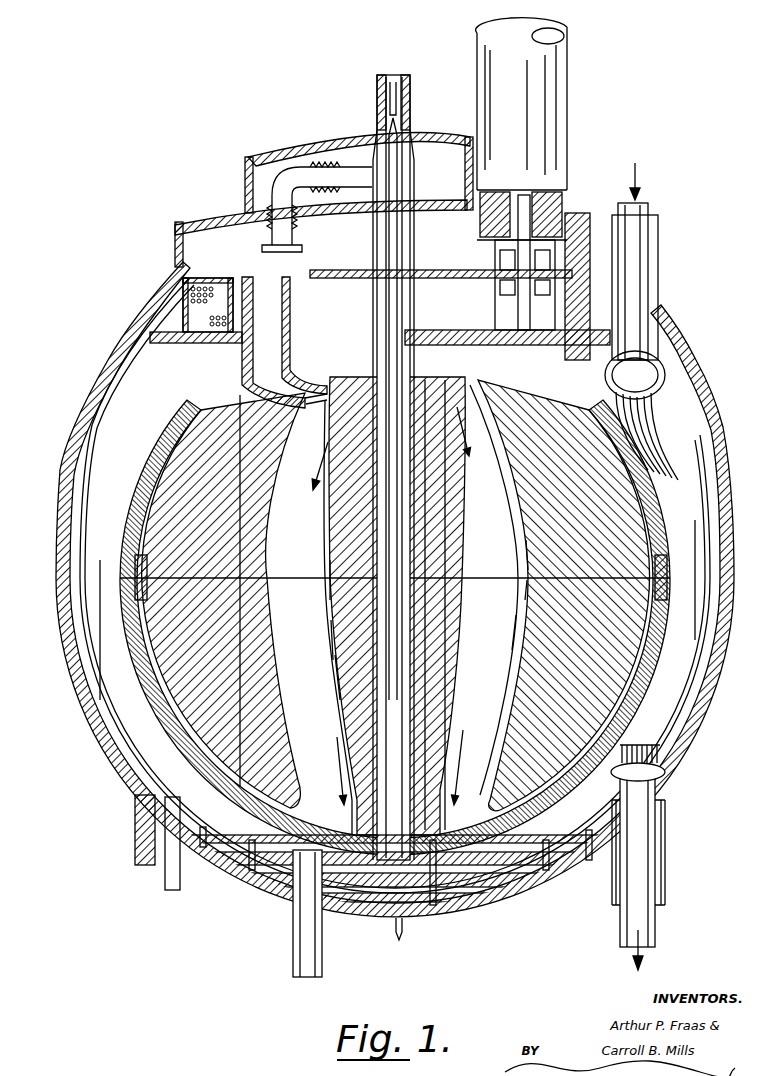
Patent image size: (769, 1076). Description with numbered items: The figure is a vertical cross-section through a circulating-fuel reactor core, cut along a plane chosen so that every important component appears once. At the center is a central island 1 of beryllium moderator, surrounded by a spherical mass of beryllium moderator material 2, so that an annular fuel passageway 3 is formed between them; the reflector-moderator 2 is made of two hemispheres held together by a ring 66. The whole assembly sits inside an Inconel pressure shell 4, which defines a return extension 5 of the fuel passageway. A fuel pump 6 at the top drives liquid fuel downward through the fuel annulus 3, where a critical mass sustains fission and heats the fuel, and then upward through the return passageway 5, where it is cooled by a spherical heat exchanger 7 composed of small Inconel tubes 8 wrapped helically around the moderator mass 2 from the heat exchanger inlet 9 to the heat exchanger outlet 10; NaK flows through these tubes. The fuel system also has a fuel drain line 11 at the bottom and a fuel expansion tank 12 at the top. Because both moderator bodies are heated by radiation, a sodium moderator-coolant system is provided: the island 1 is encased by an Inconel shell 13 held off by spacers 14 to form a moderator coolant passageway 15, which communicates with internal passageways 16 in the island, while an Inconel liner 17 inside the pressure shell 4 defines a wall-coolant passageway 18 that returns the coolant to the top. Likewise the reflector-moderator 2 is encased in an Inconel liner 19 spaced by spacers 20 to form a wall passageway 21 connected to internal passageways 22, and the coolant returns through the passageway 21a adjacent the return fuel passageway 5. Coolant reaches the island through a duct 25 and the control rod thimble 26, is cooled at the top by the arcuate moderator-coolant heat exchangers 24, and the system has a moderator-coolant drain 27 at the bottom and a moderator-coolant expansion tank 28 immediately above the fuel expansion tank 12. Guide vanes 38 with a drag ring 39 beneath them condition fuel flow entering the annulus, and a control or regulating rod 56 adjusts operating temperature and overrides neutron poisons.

The central island 1 is at (360, 517).
The moderator material 2 is at (208, 683).
The annular fuel passageway 3 is at (296, 537).
The pressure shell 4 is at (70, 420).
The return extension of the fuel passageway 5 is at (128, 693).
The fuel pump 6 is at (568, 148).
The spherical heat exchanger 7 is at (667, 358).
The Inconel tubes 8 is at (657, 462).
The heat exchanger inlet 9 is at (648, 207).
The heat exchanger outlet 10 is at (656, 937).
The fuel drain line 11 is at (293, 969).
The fuel expansion tank 12 is at (353, 255).
The Inconel shell 13 is at (332, 639).
The spacers 14 is at (342, 674).
The moderator coolant passageway 15 is at (330, 598).
The internal passageways 16 is at (446, 503).
The Inconel liner 17 is at (648, 745).
The wall-coolant passageway 18 is at (688, 756).
The Inconel liner 19 is at (516, 632).
The spacers 20 is at (526, 588).
The wall passageway 21 is at (527, 553).
The passageway 21a is at (136, 605).
The internal passageways 22 is at (538, 690).
The moderator-coolant heat exchanger 24 is at (196, 282).
The duct 25 is at (292, 176).
The control rod thimble 26 is at (386, 126).
The moderator-coolant drain 27 is at (404, 936).
The moderator-coolant expansion tank 28 is at (451, 180).
The guide vanes 38 is at (340, 362).
The drag ring 39 is at (347, 401).
The control or regulating rod 56 is at (399, 418).
The ring 66 is at (144, 560).